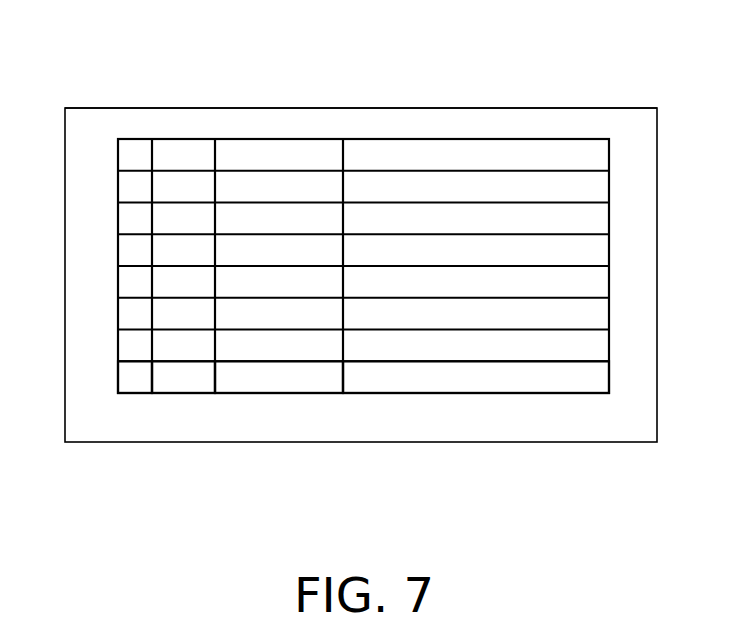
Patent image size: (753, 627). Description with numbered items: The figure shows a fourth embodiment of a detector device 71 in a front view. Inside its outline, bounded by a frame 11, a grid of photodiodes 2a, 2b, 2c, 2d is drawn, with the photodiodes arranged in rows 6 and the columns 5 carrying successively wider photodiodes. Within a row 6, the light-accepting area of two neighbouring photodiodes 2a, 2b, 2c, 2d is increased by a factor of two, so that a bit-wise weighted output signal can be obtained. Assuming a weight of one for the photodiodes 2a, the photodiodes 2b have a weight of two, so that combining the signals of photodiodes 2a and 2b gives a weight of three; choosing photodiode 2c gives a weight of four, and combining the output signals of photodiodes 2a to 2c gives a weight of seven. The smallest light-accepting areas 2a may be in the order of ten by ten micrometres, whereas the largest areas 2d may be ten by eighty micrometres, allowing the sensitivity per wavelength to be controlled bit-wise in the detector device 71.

The detector device 71 is at (628, 80).
The substrate 11 is at (482, 124).
The columns 5 is at (133, 131).
The row 6 is at (114, 155).
The photodiodes 2a is at (135, 378).
The photodiodes 2b is at (185, 378).
The photodiodes 2c is at (278, 378).
The photodiodes 2d is at (473, 378).